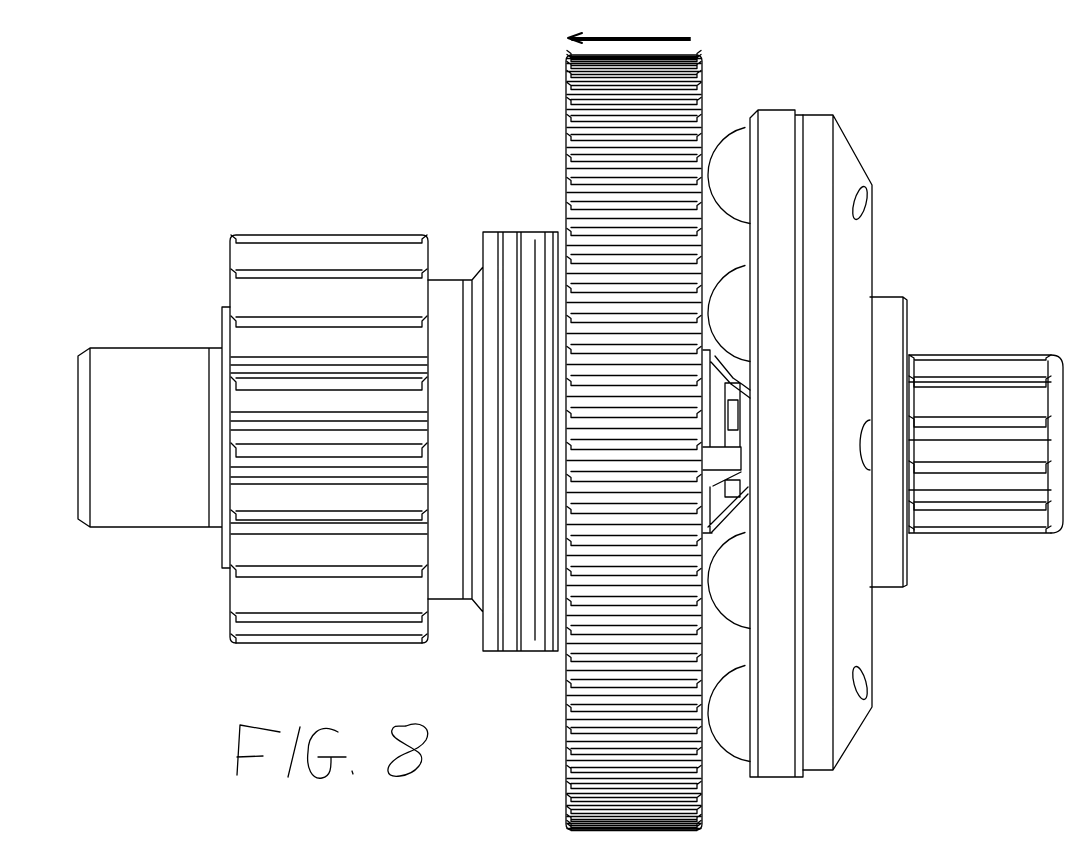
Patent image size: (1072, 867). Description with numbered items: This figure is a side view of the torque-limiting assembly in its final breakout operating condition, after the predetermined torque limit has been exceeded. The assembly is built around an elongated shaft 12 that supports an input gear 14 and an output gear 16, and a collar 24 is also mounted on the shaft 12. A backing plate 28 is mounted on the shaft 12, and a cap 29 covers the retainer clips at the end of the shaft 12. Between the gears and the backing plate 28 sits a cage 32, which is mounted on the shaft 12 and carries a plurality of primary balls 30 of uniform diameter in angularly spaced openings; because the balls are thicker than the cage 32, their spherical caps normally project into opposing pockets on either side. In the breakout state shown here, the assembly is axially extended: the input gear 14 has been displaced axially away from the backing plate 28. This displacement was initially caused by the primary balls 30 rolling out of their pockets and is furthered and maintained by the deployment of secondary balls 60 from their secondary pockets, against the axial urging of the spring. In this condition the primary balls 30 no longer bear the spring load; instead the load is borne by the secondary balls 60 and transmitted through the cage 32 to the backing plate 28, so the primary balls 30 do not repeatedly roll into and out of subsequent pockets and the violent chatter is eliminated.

The shaft 12 is at (157, 349).
The input gear 14 is at (575, 105).
The output gear 16 is at (316, 240).
The collar 24 is at (456, 288).
The backing plate 28 is at (853, 164).
The cap 29 is at (893, 327).
The primary balls 30 is at (733, 149).
The cage 32 is at (782, 127).
The secondary balls 60 is at (717, 263).